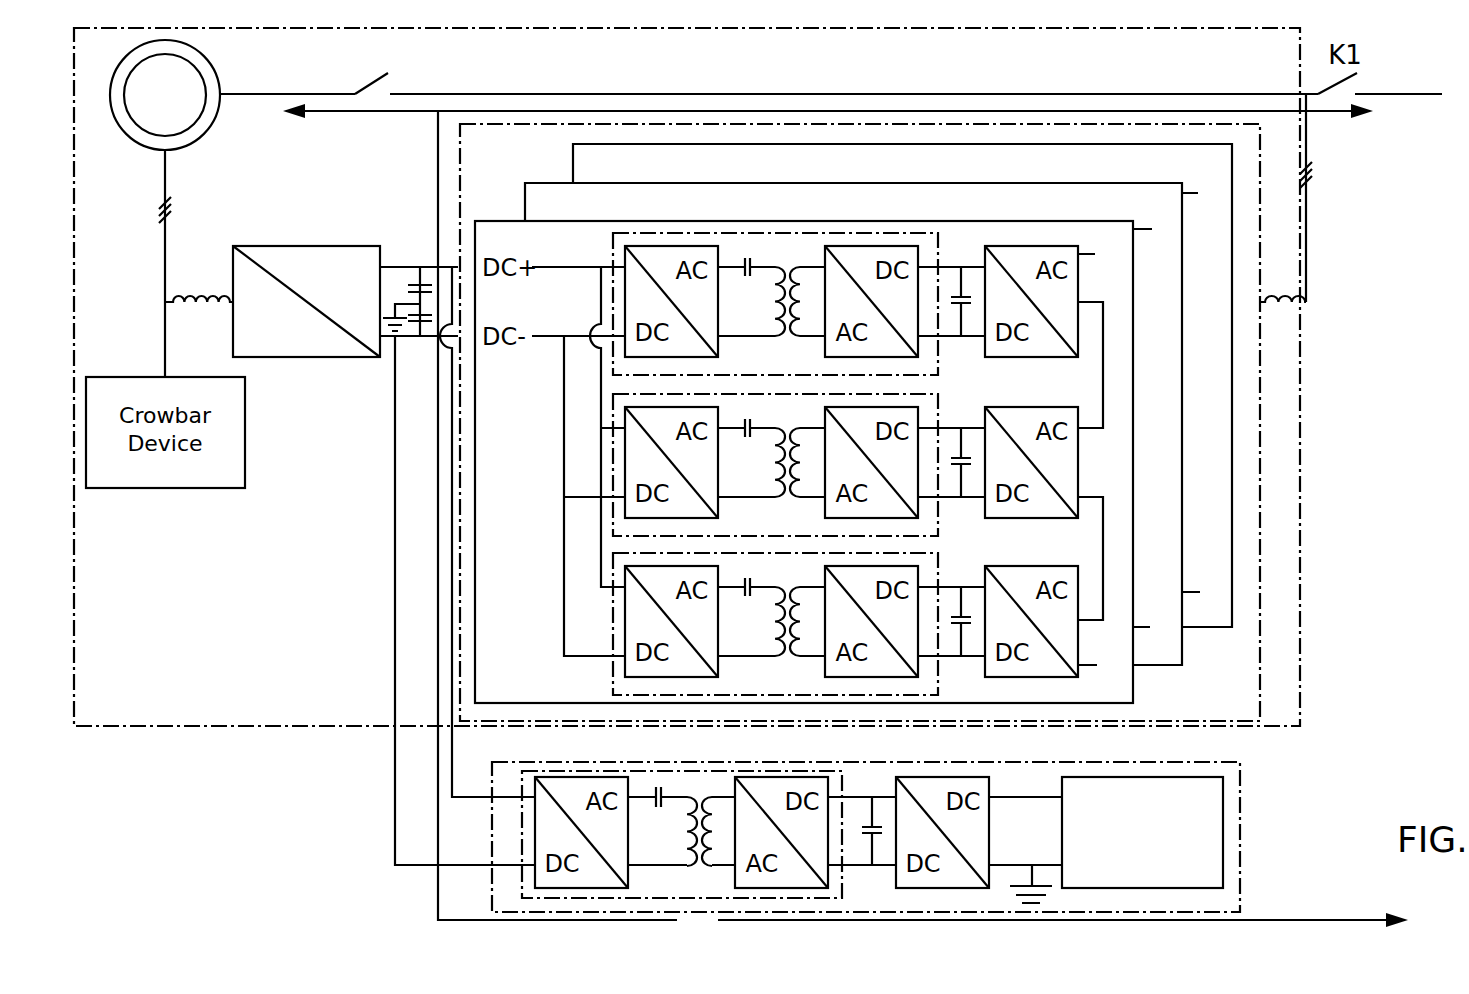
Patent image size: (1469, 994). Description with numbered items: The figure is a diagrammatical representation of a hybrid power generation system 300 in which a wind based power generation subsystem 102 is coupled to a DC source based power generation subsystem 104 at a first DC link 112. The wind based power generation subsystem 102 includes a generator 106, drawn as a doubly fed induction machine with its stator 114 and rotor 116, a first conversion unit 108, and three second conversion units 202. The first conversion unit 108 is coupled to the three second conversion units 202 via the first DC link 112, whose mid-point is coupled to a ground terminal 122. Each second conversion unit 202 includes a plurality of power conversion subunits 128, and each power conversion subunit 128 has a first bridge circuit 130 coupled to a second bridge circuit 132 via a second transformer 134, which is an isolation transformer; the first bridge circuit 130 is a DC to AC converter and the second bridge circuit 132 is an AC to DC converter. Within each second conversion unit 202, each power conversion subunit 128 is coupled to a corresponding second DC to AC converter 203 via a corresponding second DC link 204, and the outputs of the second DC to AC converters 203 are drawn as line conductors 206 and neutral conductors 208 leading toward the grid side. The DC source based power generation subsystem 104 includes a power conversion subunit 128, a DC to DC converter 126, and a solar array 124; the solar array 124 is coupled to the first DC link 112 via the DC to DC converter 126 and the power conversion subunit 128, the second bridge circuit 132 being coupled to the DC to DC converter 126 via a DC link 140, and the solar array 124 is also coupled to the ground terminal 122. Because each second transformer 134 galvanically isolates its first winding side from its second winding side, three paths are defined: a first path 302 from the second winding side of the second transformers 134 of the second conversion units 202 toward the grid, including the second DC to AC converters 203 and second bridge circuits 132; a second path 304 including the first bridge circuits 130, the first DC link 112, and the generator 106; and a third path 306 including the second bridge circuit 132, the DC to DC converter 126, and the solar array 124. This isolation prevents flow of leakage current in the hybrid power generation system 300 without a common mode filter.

The wind based power generation subsystem 102 is at (238, 726).
The DC source based power generation subsystem 104 is at (1242, 835).
The generator 106 is at (187, 119).
The first conversion unit 108 is at (307, 244).
The first DC link 112 is at (413, 283).
The generator stator 114 is at (210, 62).
The generator rotor 116 is at (206, 100).
The ground terminal 122 is at (398, 337).
The solar array 124 is at (1112, 777).
The DC to DC converter 126 is at (918, 777).
The power conversion subunit 128 is at (612, 622).
The first bridge circuit 130 is at (670, 246).
The second bridge circuit 132 is at (872, 246).
The second transformer 134 is at (776, 258).
The DC link 140 is at (872, 820).
The second conversion unit 202 is at (460, 183).
The second DC to AC converter 203 is at (1048, 246).
The second DC link 204 is at (960, 292).
The line conductors 206 is at (1127, 252).
The neutral conductors 208 is at (1120, 665).
The hybrid power generation system 300 is at (1338, 767).
The first path 302 is at (1335, 115).
The second path 304 is at (373, 113).
The third path 306 is at (1322, 918).